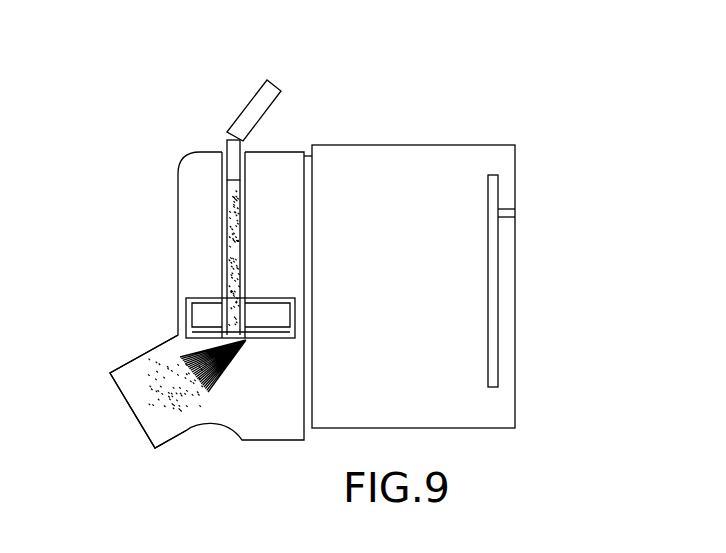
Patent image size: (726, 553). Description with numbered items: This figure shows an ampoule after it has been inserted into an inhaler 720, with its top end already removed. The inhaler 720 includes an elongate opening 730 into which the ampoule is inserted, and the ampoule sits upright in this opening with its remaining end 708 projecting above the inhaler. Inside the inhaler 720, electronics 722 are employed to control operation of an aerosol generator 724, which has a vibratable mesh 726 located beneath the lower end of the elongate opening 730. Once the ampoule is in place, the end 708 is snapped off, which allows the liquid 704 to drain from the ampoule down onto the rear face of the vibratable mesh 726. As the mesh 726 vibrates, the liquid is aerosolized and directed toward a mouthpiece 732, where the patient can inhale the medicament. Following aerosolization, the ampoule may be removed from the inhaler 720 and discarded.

The liquid 704 is at (241, 233).
The end 708 is at (248, 100).
The inhaler 720 is at (478, 120).
The electronics 722 is at (488, 302).
The aerosol generator 724 is at (295, 313).
The vibratable mesh 726 is at (250, 342).
The elongate opening 730 is at (245, 185).
The mouthpiece 732 is at (153, 448).